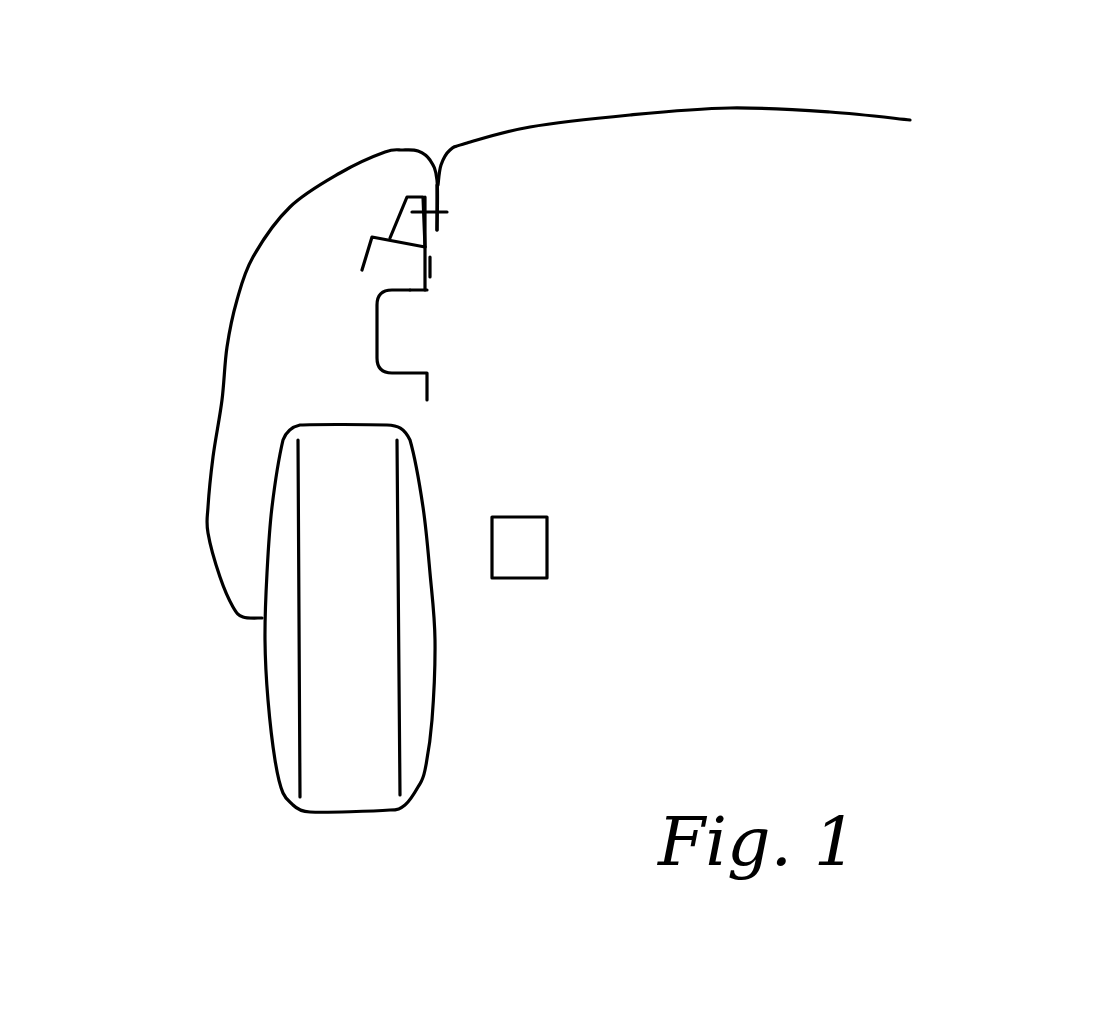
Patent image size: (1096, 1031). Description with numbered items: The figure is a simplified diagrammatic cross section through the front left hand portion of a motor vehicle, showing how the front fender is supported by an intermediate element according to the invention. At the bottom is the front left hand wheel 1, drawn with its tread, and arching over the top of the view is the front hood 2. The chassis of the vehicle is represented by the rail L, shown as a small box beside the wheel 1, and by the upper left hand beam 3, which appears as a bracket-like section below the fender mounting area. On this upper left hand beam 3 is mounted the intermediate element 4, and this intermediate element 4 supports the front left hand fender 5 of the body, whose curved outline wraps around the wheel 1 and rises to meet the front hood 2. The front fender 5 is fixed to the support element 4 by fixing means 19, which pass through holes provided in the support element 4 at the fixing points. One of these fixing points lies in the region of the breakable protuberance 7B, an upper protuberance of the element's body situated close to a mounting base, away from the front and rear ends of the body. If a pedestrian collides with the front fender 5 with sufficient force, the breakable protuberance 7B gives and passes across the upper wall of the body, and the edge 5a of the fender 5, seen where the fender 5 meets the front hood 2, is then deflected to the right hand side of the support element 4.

The front left hand wheel 1 is at (327, 710).
The front hood 2 is at (627, 113).
The upper left hand beam 3 is at (412, 295).
The intermediate element 4 is at (430, 262).
The front left hand fender 5 is at (222, 402).
The edge of the fender 5a is at (440, 202).
The breakable protuberance 7B is at (397, 220).
The fixing means 19 is at (437, 217).
The rail L is at (517, 527).